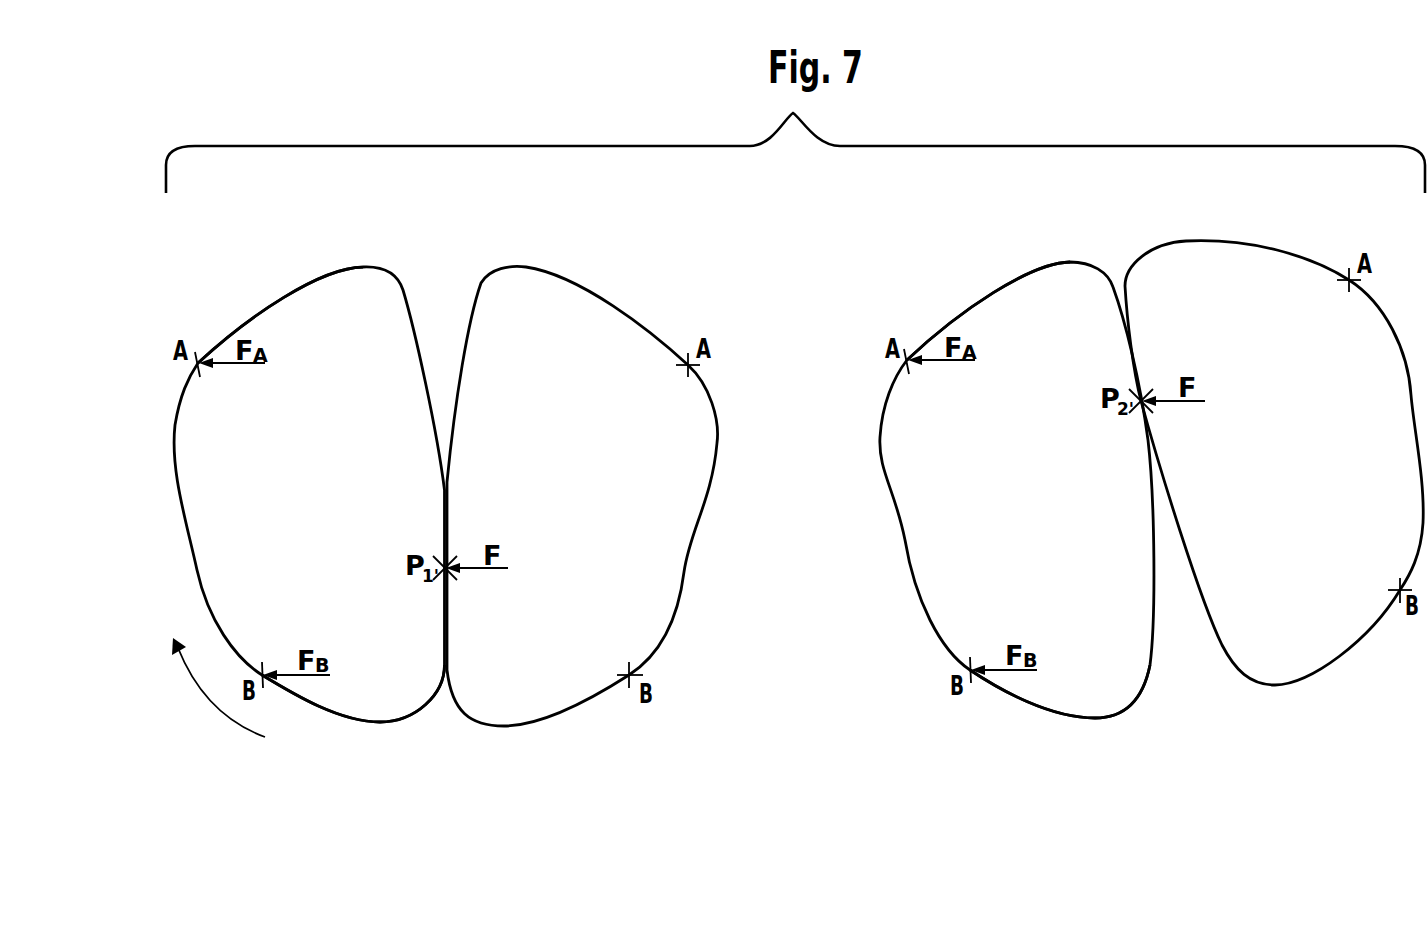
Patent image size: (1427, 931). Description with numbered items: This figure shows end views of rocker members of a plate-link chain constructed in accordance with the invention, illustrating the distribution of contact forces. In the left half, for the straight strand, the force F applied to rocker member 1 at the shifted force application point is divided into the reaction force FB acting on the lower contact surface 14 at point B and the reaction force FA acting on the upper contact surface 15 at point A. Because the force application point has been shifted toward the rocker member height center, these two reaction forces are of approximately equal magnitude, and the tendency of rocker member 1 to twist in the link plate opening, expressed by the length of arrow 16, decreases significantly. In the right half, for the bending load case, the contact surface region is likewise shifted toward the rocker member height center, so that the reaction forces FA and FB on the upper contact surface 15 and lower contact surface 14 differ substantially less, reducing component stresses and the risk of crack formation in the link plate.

The rocker member 1 is at (205, 577).
The lower contact surface 14 is at (370, 722).
The upper contact surface 15 is at (283, 295).
The arrow 16 is at (230, 715).